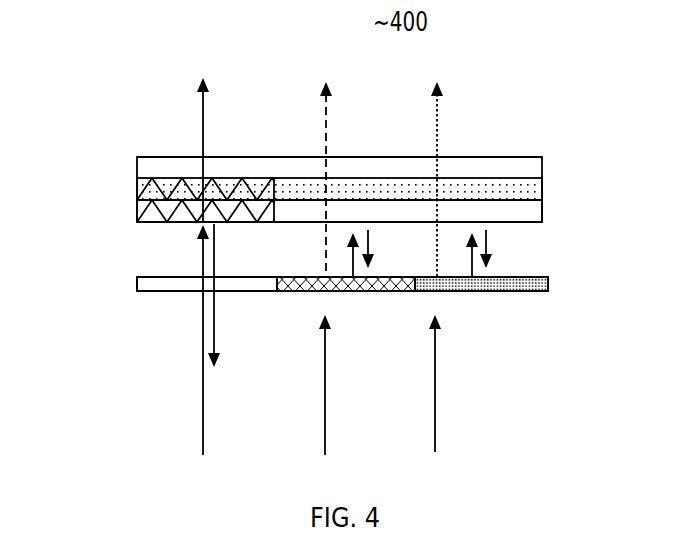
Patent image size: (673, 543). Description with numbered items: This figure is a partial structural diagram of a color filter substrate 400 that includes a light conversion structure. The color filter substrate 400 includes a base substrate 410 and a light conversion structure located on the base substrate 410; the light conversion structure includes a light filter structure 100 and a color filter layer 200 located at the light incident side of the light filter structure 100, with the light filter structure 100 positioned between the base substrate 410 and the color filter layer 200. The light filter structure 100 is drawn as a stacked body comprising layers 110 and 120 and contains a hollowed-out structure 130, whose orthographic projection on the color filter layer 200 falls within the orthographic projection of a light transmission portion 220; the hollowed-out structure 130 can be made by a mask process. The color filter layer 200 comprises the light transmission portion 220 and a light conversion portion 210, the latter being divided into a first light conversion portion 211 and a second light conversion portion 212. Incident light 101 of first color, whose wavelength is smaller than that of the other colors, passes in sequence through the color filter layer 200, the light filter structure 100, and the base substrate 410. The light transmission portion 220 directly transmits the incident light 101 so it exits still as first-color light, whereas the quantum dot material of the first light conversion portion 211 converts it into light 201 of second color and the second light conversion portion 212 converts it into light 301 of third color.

The color filter substrate 400 is at (343, 237).
The light filter structure 100 is at (353, 187).
The base substrate 410 is at (483, 163).
The light-emitting layer 110 is at (330, 197).
The substrate layer 120 is at (485, 213).
The hollowed-out structure 130 is at (137, 198).
The color filter layer 200 is at (343, 276).
The light transmission portion 220 is at (193, 285).
The light conversion portion 210 is at (471, 287).
The first light conversion portion 211 is at (332, 287).
The second light conversion portion 212 is at (452, 285).
The incident light of first color 101 is at (575, 361).
The light of second color 201 is at (343, 256).
The light of third color 301 is at (457, 167).